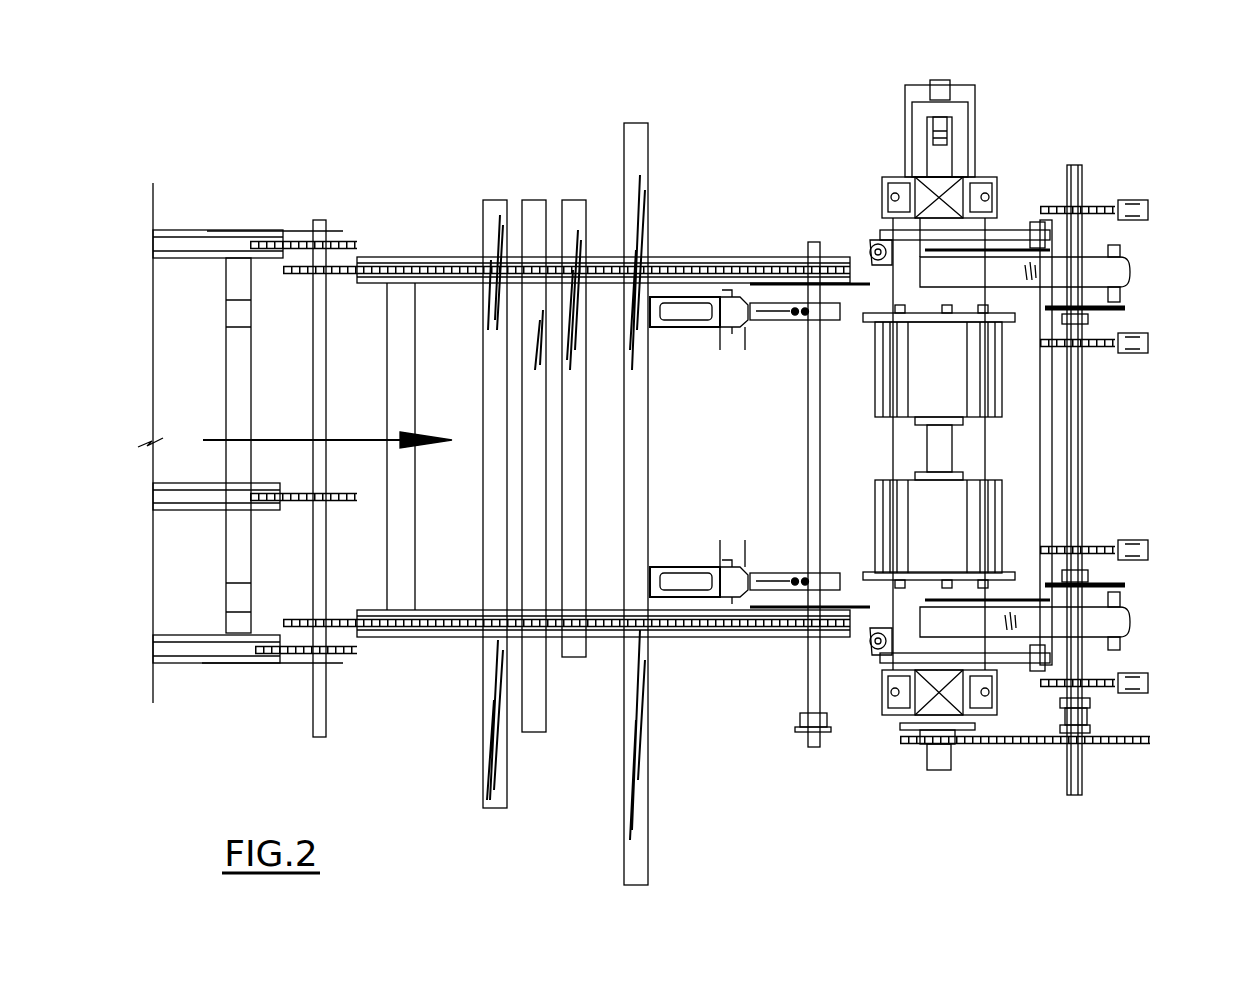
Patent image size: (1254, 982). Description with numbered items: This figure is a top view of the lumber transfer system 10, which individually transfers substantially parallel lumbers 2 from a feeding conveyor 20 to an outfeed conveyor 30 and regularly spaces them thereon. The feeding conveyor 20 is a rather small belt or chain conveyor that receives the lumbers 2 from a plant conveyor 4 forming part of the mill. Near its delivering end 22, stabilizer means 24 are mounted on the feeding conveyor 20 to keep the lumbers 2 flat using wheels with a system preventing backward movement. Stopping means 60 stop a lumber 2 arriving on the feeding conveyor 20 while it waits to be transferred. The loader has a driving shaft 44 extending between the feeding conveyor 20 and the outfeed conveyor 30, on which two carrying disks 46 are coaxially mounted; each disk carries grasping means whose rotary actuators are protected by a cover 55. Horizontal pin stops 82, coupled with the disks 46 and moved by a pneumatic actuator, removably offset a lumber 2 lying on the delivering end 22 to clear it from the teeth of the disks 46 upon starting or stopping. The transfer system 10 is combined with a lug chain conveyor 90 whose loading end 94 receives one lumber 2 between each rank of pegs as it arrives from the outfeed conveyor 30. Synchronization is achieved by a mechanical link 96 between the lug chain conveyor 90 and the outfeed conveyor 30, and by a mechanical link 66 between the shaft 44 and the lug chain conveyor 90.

The lumbers 2 is at (566, 200).
The plant conveyor 4 is at (338, 100).
The lumber transfer system 10 is at (1140, 825).
The feeding conveyor 20 is at (362, 110).
The delivering end 22 is at (850, 262).
The stabilizer means 24 is at (740, 300).
The outfeed conveyor 30 is at (1102, 268).
The driving shaft 44 is at (927, 441).
The carrying disks 46 is at (870, 320).
The cover 55 is at (955, 518).
The stopping means 60 is at (872, 655).
The mechanical link 66 is at (1015, 746).
The horizontal pin stops 82 is at (1000, 230).
The lug chain conveyor 90 is at (1235, 100).
The loading end 94 is at (1044, 196).
The mechanical link 96 is at (1092, 325).